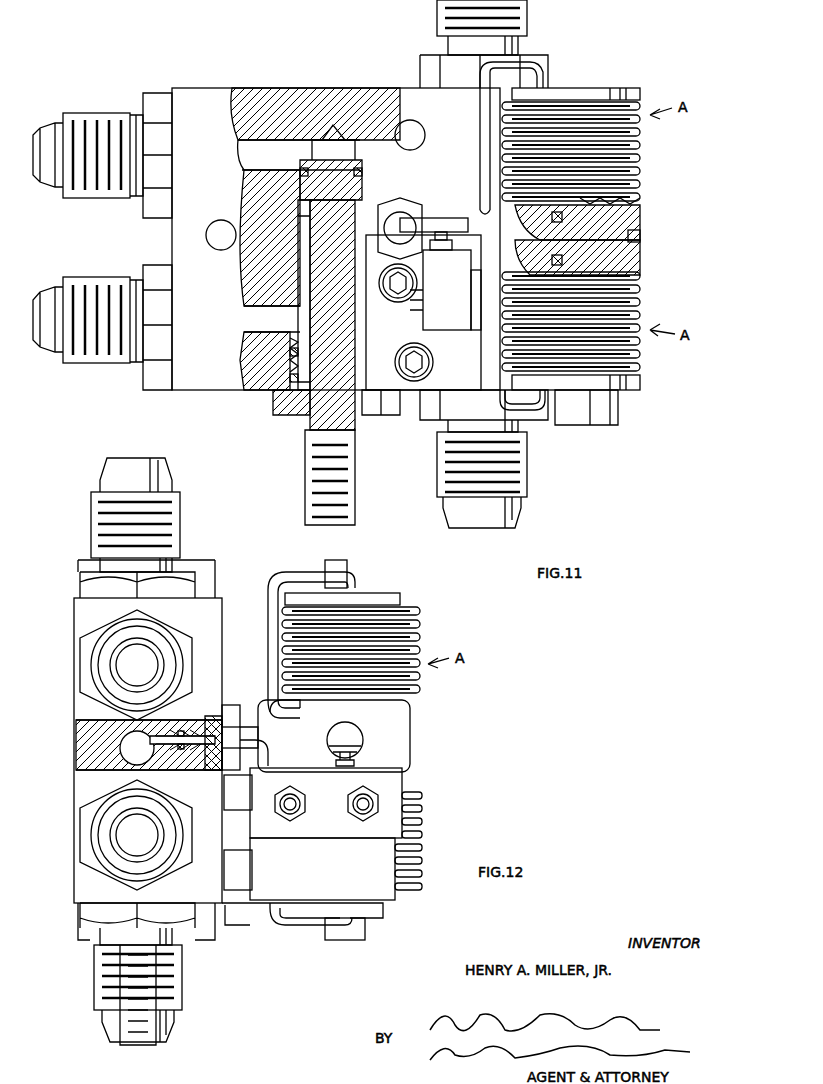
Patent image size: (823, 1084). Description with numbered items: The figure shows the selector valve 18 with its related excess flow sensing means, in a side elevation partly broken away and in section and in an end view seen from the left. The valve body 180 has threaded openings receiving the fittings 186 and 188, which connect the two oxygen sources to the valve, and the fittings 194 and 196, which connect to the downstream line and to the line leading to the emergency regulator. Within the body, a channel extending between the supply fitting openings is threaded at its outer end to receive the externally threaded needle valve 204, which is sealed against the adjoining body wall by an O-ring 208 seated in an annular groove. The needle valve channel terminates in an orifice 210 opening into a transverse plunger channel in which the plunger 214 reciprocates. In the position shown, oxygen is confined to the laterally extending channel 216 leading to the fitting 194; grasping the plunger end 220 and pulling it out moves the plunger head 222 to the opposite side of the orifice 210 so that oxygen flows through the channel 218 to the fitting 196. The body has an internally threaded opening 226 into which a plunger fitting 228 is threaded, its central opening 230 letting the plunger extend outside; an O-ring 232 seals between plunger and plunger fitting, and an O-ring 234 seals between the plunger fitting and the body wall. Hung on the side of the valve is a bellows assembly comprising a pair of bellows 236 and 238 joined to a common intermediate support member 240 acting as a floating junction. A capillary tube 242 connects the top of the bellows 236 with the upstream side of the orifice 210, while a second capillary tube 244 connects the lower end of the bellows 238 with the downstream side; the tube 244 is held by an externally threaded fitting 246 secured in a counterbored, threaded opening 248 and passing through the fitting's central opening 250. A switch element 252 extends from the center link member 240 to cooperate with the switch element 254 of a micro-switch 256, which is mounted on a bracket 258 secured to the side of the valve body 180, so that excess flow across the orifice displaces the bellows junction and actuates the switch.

In FIG. 11, the selector valve 18 is at (194, 65).
In FIG. 12, the selector valve 18 is at (47, 672).
In FIG. 11, the valve body 180 is at (272, 92).
In FIG. 12, the valve body 180 is at (85, 735).
In FIG. 11, the fitting 186 is at (525, 15).
In FIG. 12, the fitting 186 is at (177, 517).
In FIG. 11, the fitting 188 is at (527, 488).
In FIG. 12, the fitting 188 is at (182, 999).
In FIG. 11, the fitting 194 is at (95, 365).
In FIG. 12, the fitting 194 is at (95, 845).
In FIG. 11, the fitting 196 is at (93, 115).
In FIG. 12, the fitting 196 is at (90, 651).
In FIG. 11, the needle valve 204 is at (640, 258).
In FIG. 11, the O-ring 208 is at (640, 216).
In FIG. 12, the orifice 210 is at (125, 758).
In FIG. 11, the plunger 214 is at (350, 315).
In FIG. 12, the plunger 214 is at (118, 945).
In FIG. 11, the channel 216 is at (245, 318).
In FIG. 11, the channel 218 is at (252, 160).
In FIG. 11, the plunger end 220 is at (355, 490).
In FIG. 12, the plunger end 220 is at (143, 1035).
In FIG. 11, the plunger head 222 is at (362, 175).
In FIG. 11, the internally threaded opening 226 is at (270, 362).
In FIG. 11, the plunger fitting 228 is at (388, 412).
In FIG. 11, the central opening 230 is at (312, 402).
In FIG. 11, the O-ring 232 is at (300, 340).
In FIG. 11, the O-ring 234 is at (275, 400).
In FIG. 11, the bellows 236 is at (630, 152).
In FIG. 12, the bellows 236 is at (420, 636).
In FIG. 11, the bellows 238 is at (630, 370).
In FIG. 12, the bellows 238 is at (422, 822).
In FIG. 12, the intermediate support member 240 is at (410, 740).
In FIG. 11, the capillary tube 242 is at (480, 158).
In FIG. 12, the capillary tube 242 is at (268, 650).
In FIG. 12, the capillary tube 244 is at (270, 745).
In FIG. 12, the fitting 246 is at (243, 710).
In FIG. 12, the opening 248 is at (165, 750).
In FIG. 12, the central opening 250 is at (258, 765).
In FIG. 11, the switch element 252 is at (432, 225).
In FIG. 12, the switch element 252 is at (355, 735).
In FIG. 11, the switch element 254 is at (450, 242).
In FIG. 12, the switch element 254 is at (356, 753).
In FIG. 11, the micro-switch 256 is at (456, 318).
In FIG. 12, the bracket 258 is at (393, 792).